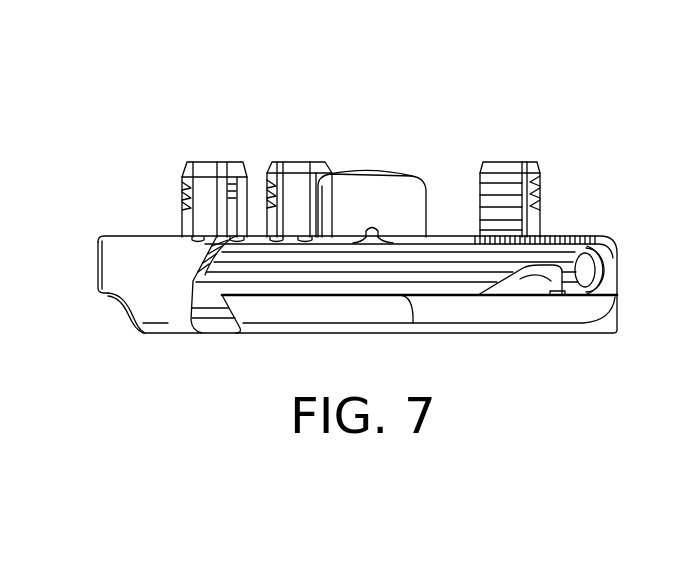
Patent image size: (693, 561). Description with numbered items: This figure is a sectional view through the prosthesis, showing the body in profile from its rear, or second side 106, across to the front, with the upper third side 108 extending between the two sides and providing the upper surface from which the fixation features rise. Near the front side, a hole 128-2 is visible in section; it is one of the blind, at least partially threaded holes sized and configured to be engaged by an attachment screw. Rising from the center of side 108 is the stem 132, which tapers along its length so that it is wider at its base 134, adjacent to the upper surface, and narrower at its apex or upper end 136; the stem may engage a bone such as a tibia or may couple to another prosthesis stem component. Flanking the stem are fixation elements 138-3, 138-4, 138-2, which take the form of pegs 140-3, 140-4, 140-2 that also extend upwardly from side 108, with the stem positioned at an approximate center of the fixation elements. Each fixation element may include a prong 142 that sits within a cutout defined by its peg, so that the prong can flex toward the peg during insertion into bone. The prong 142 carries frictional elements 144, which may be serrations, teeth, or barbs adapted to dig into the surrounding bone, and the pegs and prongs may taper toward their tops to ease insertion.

The second side 106 is at (97, 272).
The third side 108 is at (125, 235).
The hole 128-2 is at (583, 273).
The stem 132 is at (395, 170).
The base 134 is at (428, 234).
The upper end 136 is at (377, 170).
The fixation element 138-2 is at (548, 152).
The fixation element 138-3 is at (163, 147).
The fixation element 138-4 is at (264, 141).
The peg 140-2 is at (548, 168).
The peg 140-3 is at (202, 182).
The peg 140-4 is at (300, 182).
The prong 142 is at (533, 213).
The frictional element 144 is at (540, 193).